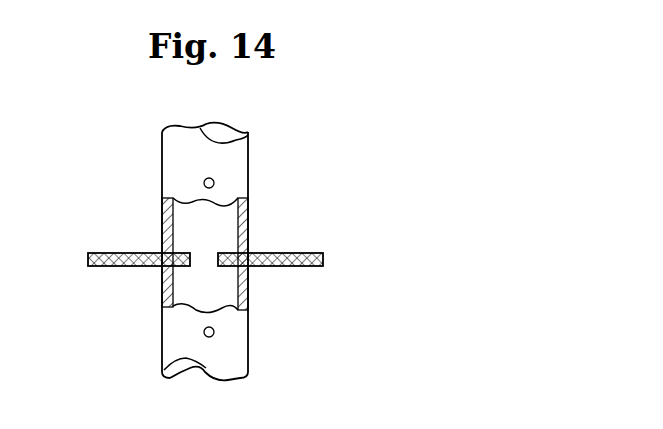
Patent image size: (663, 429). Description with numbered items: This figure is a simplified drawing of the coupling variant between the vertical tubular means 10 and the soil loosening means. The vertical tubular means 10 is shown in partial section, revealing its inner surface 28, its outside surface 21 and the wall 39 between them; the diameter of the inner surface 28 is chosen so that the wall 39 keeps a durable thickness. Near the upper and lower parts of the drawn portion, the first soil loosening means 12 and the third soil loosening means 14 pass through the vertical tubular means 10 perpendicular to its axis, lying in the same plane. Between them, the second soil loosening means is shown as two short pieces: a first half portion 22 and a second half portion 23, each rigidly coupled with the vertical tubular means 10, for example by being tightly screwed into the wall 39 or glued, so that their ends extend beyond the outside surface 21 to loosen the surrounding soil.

The vertical tubular means 10 is at (230, 158).
The first soil loosening means 12 is at (214, 183).
The third soil loosening means 14 is at (214, 332).
The outside surface 21 is at (249, 290).
The first half portion of the second soil loosening means 22 is at (139, 253).
The second half portion of the second soil loosening means 23 is at (290, 253).
The inner surface 28 is at (238, 219).
The wall 39 is at (166, 290).